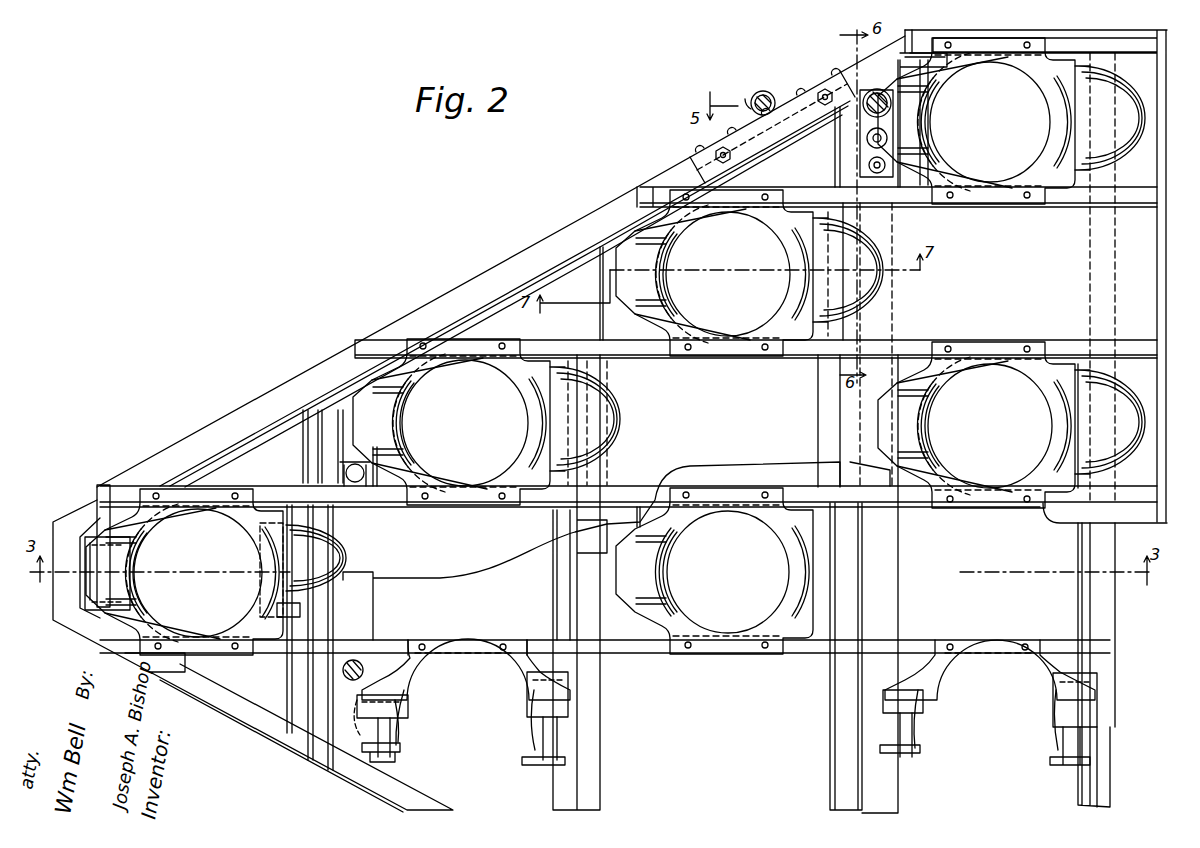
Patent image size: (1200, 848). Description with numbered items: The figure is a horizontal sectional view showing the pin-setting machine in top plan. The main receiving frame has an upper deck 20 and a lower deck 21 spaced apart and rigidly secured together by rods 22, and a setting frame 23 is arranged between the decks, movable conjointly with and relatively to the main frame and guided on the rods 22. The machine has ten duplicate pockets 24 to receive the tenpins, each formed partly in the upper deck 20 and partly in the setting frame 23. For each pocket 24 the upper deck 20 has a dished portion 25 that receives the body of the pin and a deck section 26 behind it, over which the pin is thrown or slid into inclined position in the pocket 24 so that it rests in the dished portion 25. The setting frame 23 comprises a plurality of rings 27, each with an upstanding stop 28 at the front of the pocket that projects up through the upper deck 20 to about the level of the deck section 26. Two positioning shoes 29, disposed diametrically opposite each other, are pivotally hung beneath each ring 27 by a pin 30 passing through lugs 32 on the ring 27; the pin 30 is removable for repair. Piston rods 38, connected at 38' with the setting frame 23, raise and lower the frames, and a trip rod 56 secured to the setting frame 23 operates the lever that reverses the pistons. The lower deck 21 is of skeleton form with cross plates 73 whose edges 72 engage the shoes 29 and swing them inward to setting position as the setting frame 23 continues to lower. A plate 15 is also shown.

The plate 15 is at (948, 92).
The upper deck 20 is at (665, 188).
The lower deck 21 is at (248, 718).
The rods 22 is at (860, 140).
The setting frame 23 is at (462, 287).
The pocket 24 is at (578, 347).
The dished portion 25 is at (1128, 132).
The deck section 26 is at (1150, 122).
The ring 27 is at (1036, 168).
The stop 28 is at (940, 120).
The positioning shoe 29 is at (265, 567).
The pin 30 is at (396, 732).
The lugs 32 is at (350, 720).
The piston rod 38 is at (762, 89).
The connection of piston rod to intermediate frame 38' is at (729, 86).
The trip rod 56 is at (869, 167).
The edge 72 is at (675, 627).
The cross plates 73 is at (292, 685).